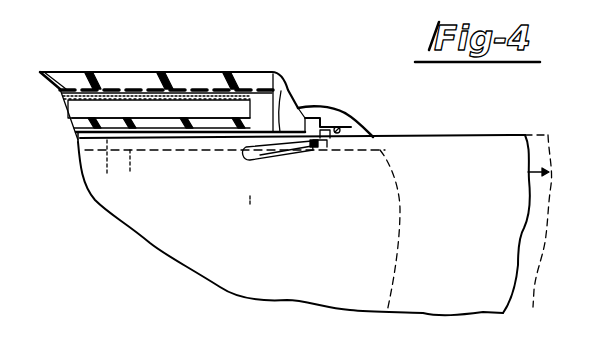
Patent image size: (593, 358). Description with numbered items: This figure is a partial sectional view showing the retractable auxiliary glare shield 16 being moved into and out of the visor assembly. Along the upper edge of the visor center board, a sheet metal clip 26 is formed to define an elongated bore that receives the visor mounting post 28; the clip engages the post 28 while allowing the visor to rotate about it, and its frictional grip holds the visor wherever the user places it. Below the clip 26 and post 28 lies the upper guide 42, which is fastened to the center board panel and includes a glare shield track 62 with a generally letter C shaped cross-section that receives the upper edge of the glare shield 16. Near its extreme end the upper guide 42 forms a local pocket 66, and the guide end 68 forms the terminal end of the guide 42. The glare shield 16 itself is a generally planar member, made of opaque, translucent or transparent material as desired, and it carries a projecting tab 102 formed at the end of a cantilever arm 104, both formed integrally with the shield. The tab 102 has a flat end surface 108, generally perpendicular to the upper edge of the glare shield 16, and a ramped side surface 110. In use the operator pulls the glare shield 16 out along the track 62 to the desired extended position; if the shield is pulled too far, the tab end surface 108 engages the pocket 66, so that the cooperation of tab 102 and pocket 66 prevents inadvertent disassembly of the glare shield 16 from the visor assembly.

The auxiliary glare shield 16 is at (315, 225).
The sheet metal clip 26 is at (127, 90).
The visor mounting post 28 is at (280, 77).
The upper guide 42 is at (302, 112).
The glare shield track 62 is at (93, 142).
The local pocket 66 is at (367, 128).
The guide end 68 is at (368, 135).
The projecting tab 102 is at (325, 110).
The cantilever arm 104 is at (281, 91).
The flat end surface 108 is at (316, 147).
The ramped side surface 110 is at (288, 158).